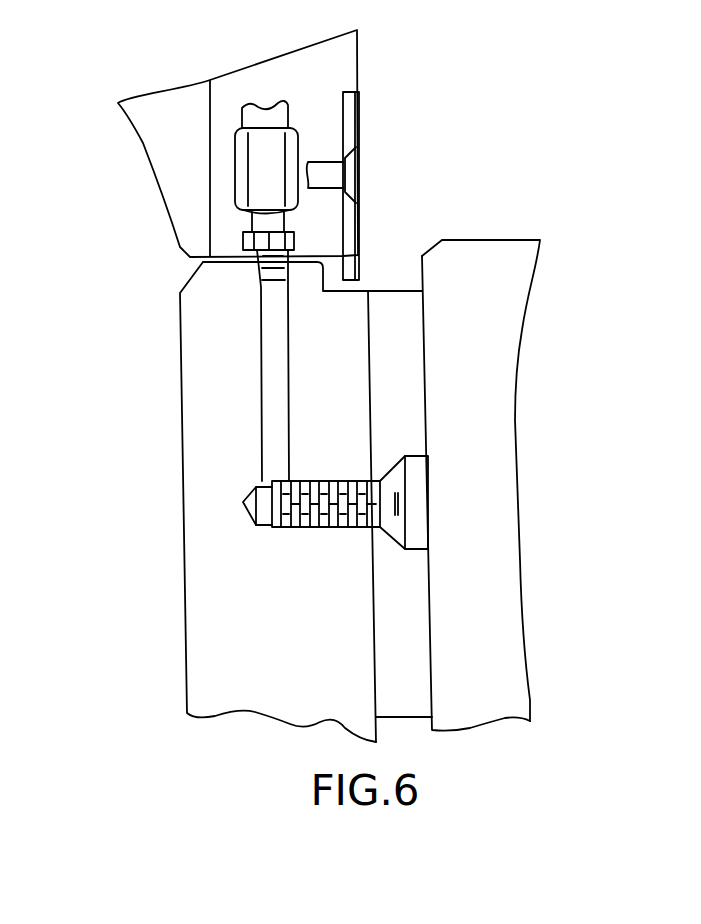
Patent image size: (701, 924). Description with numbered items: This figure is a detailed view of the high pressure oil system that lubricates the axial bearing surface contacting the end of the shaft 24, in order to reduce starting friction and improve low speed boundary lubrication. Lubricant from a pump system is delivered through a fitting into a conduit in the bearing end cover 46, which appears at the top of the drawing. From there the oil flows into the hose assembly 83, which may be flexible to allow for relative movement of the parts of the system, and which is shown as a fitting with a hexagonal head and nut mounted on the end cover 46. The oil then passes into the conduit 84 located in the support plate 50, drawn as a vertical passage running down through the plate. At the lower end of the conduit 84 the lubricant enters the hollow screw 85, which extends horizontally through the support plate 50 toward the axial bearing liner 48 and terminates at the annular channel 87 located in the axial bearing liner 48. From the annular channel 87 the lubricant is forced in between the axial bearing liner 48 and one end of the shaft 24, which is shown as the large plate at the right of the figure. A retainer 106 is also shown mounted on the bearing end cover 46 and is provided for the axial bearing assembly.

The shaft 24 is at (522, 240).
The bearing end cover 46 is at (178, 185).
The axial bearing liner 48 is at (408, 362).
The support plate 50 is at (200, 427).
The hose assembly 83 is at (288, 114).
The conduit 84 is at (262, 361).
The hollow screw 85 is at (323, 527).
The annular channel 87 is at (420, 478).
The retainer 106 is at (352, 138).